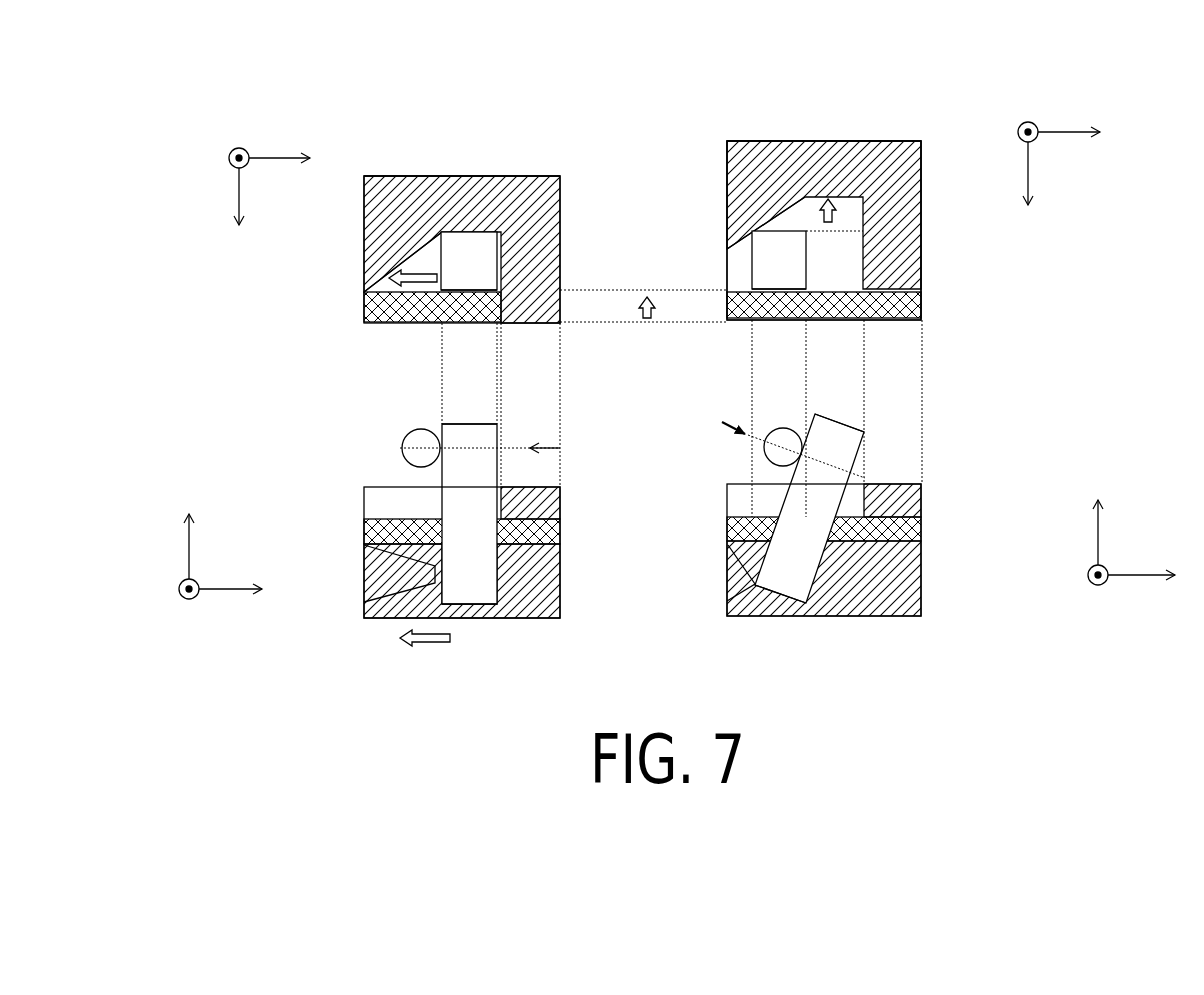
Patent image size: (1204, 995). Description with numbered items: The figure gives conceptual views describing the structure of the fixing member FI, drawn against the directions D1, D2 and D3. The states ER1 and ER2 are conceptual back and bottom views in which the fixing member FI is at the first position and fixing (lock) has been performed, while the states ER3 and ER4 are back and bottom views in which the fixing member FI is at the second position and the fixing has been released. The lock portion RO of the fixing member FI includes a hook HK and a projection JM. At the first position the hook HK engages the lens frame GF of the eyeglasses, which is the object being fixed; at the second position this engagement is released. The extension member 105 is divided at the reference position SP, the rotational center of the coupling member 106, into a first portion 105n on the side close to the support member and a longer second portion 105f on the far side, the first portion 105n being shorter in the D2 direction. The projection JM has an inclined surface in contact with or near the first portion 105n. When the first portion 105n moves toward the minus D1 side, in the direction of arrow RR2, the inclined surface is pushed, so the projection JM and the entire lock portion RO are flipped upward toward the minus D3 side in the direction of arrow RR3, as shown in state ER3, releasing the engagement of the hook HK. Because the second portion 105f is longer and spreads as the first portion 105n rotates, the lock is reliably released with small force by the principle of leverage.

The state ER1 is at (372, 128).
The state ER2 is at (329, 435).
The state ER3 is at (752, 110).
The state ER4 is at (741, 416).
The fixing member FI is at (497, 153).
The lock portion RO is at (453, 176).
The projection JM is at (385, 243).
The arrow RR2 is at (392, 284).
The arrow RR3 is at (836, 214).
The lens frame GF is at (364, 308).
The hook HK is at (560, 290).
The extension member 105 is at (473, 280).
The first portion 105n is at (800, 505).
The second portion 105f is at (471, 432).
The coupling member 106 is at (422, 437).
The reference position SP is at (637, 430).
The D1 direction D1 is at (701, 360).
The D2 direction D2 is at (620, 341).
The D3 direction D3 is at (622, 379).